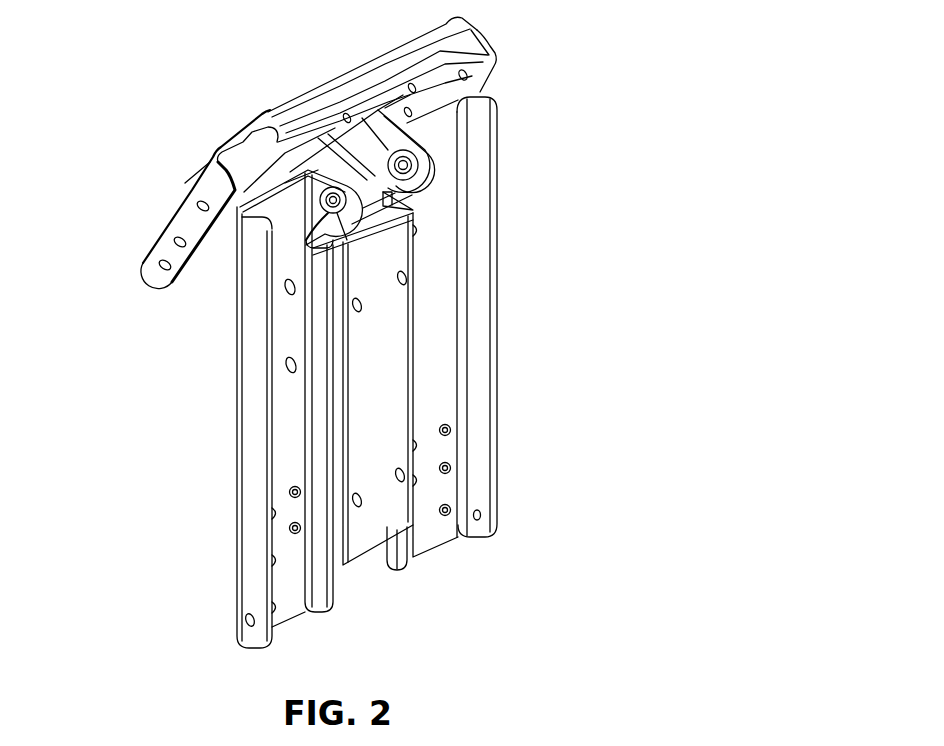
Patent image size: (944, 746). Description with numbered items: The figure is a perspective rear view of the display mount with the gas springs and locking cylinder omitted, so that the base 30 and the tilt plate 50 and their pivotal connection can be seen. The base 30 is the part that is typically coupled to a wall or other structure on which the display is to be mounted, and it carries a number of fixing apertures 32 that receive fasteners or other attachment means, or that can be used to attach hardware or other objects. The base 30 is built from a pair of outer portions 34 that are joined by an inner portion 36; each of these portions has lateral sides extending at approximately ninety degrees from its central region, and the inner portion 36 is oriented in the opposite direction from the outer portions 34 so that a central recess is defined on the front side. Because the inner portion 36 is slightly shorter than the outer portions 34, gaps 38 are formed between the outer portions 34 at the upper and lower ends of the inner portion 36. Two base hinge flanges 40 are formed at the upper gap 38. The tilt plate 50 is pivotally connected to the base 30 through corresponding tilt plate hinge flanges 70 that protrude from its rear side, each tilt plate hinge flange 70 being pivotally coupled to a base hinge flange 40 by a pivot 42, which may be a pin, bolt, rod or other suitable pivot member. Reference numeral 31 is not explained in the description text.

The base 30 is at (209, 406).
The channel member 31 is at (244, 588).
The fixing apertures 32 is at (294, 382).
The outer portions 34 is at (288, 621).
The inner portion 36 is at (385, 533).
The gaps 38 is at (351, 240).
The base hinge flanges 40 is at (437, 153).
The pivot 42 is at (360, 248).
The tilt plate 50 is at (132, 239).
The tilt plate hinge flanges 70 is at (373, 133).